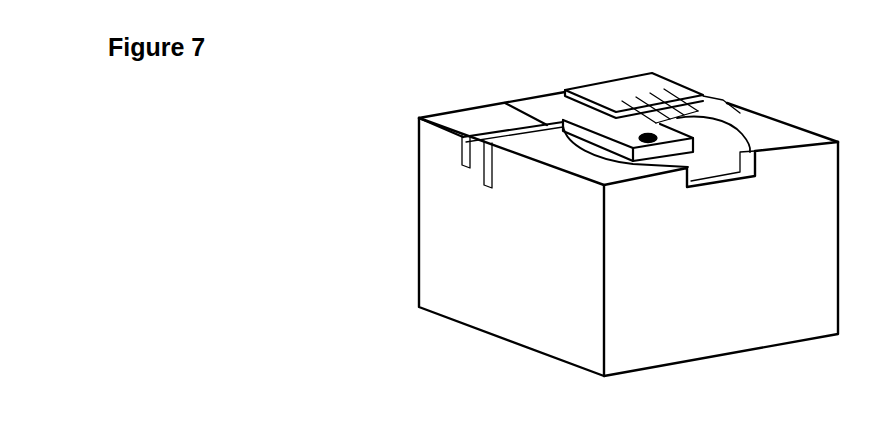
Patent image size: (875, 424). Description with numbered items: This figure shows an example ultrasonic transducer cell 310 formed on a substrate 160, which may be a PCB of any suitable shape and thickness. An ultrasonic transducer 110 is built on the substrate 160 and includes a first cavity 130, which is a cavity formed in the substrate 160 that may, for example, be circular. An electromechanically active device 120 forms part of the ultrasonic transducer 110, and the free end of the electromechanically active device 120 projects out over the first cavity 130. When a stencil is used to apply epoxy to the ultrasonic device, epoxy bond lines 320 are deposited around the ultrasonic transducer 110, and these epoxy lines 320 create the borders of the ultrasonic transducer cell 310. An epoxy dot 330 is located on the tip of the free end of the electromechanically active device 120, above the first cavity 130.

The ultrasonic transducer 110 is at (438, 113).
The substrate 160 is at (417, 249).
The ultrasonic transducer cell 310 is at (499, 105).
The epoxy lines 320 is at (607, 87).
The epoxy dot 330 is at (653, 130).
The electromechanically active device 120 is at (703, 101).
The first cavity 130 is at (704, 173).